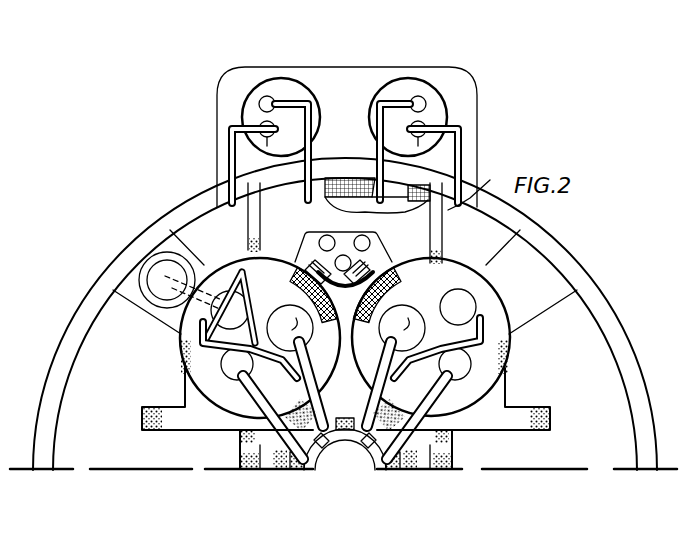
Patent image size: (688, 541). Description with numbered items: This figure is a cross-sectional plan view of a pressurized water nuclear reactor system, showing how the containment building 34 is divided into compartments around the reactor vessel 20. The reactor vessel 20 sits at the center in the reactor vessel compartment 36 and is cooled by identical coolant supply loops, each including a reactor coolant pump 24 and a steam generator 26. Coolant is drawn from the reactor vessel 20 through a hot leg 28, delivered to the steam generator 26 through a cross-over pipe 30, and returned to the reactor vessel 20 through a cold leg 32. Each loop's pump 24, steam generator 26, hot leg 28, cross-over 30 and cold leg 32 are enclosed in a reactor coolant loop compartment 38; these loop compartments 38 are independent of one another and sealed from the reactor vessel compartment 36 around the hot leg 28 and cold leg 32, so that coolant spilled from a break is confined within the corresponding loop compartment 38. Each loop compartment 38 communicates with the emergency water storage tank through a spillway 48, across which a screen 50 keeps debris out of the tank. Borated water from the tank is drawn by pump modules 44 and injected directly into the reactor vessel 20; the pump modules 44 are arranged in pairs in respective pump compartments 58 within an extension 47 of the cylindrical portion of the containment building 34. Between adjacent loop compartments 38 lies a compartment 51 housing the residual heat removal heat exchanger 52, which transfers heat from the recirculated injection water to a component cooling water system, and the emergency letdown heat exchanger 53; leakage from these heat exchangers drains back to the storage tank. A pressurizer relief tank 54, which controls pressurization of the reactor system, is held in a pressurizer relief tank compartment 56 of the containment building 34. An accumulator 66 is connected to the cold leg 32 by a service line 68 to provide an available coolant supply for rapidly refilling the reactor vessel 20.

The reactor vessel 20 is at (345, 455).
The reactor coolant pump 24 is at (215, 380).
The steam generator 26 is at (258, 362).
The hot leg 28 is at (262, 400).
The cross-over pipe 30 is at (285, 318).
The cold leg 32 is at (305, 330).
The containment building 34 is at (600, 300).
The reactor vessel compartment 36 is at (300, 478).
The reactor coolant loop compartment 38 is at (200, 350).
The pump module 44 is at (418, 98).
The extension 47 is at (338, 72).
The spillway 48 is at (435, 200).
The screen 50 is at (480, 184).
The compartment 51 is at (308, 242).
The residual heat removal heat exchanger 52 is at (318, 235).
The emergency letdown heat exchanger 53 is at (340, 236).
The pressurizer relief tank 54 is at (165, 268).
The pressurizer relief tank compartment 56 is at (140, 272).
The pump compartment 58 is at (260, 88).
The accumulator 66 is at (232, 300).
The service line 68 is at (200, 340).